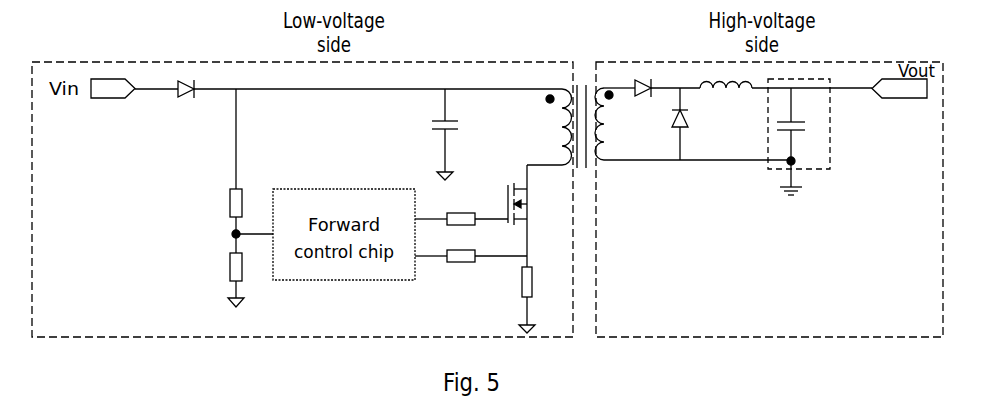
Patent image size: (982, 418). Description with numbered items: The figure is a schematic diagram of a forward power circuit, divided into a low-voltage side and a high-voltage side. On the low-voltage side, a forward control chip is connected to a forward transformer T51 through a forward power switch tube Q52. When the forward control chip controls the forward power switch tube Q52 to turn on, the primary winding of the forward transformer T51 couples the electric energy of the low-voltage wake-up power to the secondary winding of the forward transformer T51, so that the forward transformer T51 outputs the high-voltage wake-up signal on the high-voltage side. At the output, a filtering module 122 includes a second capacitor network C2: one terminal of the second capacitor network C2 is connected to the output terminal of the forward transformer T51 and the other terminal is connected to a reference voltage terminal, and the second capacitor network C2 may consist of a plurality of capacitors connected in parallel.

The filtering module 122 is at (828, 137).
The second capacitor network C2 is at (799, 124).
The forward power switch tube Q52 is at (502, 213).
The forward transformer T51 is at (570, 101).